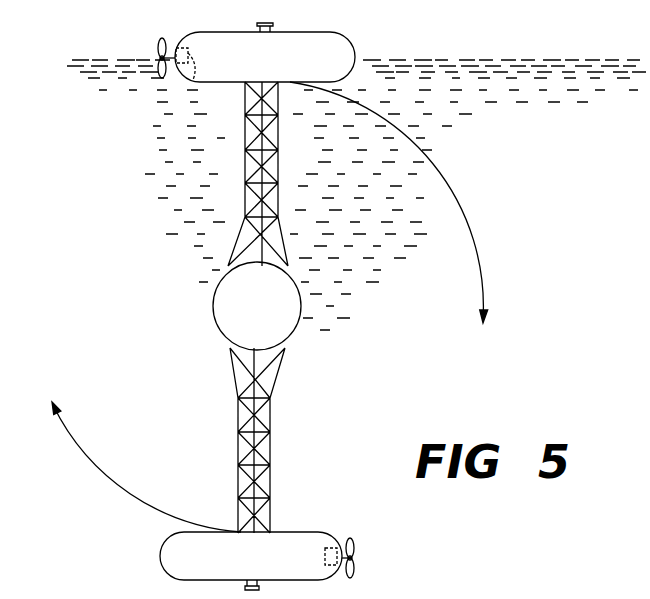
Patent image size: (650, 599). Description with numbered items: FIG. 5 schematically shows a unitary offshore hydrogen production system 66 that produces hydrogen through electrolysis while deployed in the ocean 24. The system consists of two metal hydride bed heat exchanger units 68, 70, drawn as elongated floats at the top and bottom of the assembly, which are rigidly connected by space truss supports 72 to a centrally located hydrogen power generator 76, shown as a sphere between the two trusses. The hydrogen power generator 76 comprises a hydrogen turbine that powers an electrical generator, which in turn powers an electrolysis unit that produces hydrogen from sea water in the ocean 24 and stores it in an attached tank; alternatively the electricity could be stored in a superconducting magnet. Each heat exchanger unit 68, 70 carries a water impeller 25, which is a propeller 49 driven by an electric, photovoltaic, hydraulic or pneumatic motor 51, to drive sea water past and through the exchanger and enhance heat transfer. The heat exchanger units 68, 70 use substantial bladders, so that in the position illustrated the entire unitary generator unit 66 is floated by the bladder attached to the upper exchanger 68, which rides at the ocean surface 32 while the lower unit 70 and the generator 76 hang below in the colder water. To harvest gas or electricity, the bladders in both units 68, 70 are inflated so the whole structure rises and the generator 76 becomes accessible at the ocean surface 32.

The ocean 24 is at (444, 319).
The water impeller 25 is at (158, 48).
The ocean surface 32 is at (541, 60).
The propeller 49 is at (162, 74).
The motor 51 is at (192, 81).
The unitary offshore hydrogen production system 66 is at (393, 190).
The metal hydride bed heat exchanger unit 68 is at (338, 52).
The metal hydride bed heat exchanger unit 70 is at (297, 540).
The space truss support 72 is at (280, 198).
The hydrogen power generator 76 is at (295, 320).